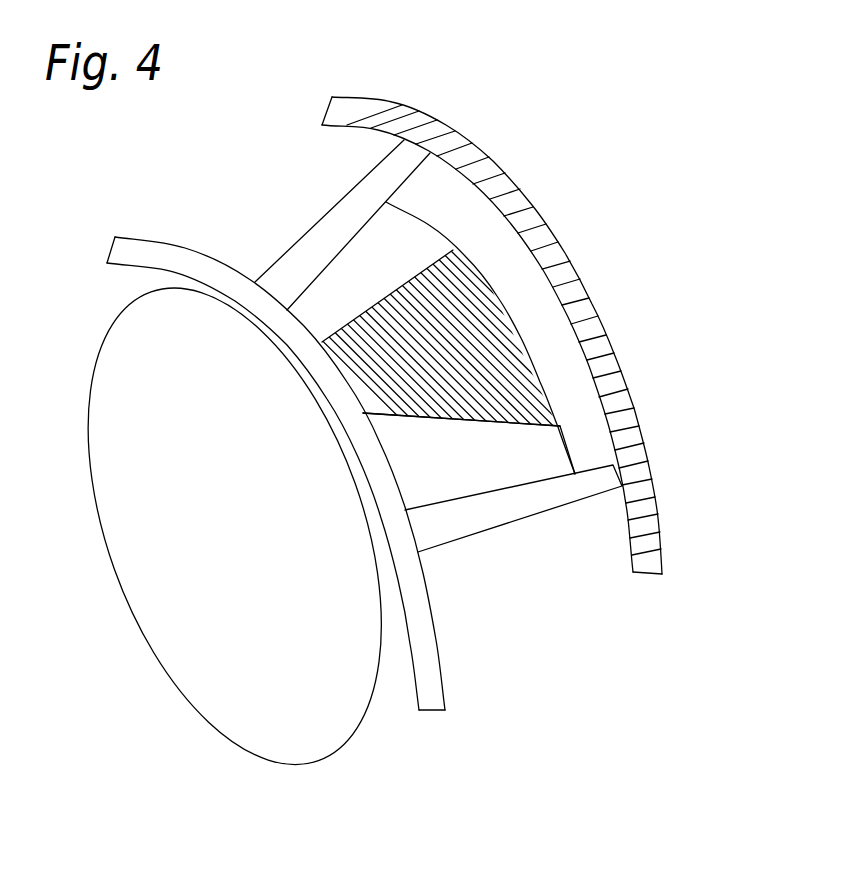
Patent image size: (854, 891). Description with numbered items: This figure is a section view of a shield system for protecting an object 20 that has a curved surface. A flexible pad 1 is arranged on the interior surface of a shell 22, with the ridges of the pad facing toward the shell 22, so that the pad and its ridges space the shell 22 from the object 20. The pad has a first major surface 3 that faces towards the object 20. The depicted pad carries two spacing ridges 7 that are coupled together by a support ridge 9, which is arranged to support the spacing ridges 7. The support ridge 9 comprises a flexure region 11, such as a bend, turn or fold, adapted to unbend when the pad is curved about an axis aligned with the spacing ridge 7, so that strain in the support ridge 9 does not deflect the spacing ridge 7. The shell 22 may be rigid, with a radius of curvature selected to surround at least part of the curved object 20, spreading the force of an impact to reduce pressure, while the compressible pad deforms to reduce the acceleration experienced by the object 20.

The flexible pad 1 is at (115, 228).
The first major surface 3 is at (445, 679).
The spacing ridge 7 is at (322, 243).
The support ridge 9 is at (469, 443).
The flexure region 11 is at (475, 369).
The object 20 is at (235, 526).
The shell 22 is at (662, 543).